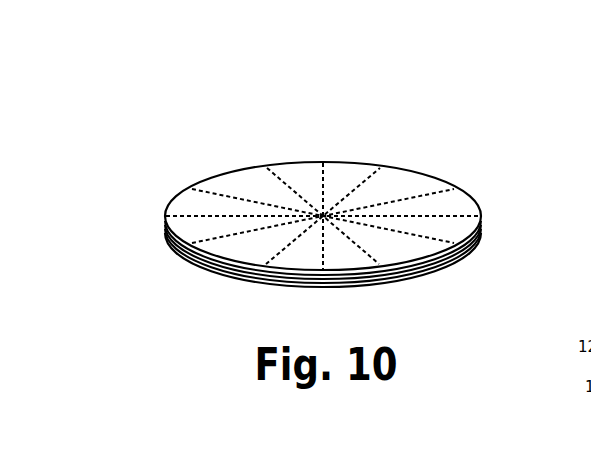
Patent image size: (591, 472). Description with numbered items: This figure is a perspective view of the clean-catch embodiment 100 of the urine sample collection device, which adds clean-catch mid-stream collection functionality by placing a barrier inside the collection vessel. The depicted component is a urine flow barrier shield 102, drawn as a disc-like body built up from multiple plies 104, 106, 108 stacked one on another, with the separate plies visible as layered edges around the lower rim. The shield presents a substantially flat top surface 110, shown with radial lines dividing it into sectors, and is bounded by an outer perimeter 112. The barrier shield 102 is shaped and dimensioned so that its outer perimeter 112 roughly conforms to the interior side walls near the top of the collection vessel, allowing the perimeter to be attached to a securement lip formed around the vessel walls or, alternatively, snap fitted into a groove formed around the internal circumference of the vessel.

The clean-catch embodiment 100 is at (478, 182).
The urine flow barrier shield 102 is at (347, 173).
The ply 104 is at (302, 258).
The ply 106 is at (350, 261).
The ply 108 is at (417, 250).
The flat top surface 110 is at (268, 192).
The outer perimeter 112 is at (288, 160).